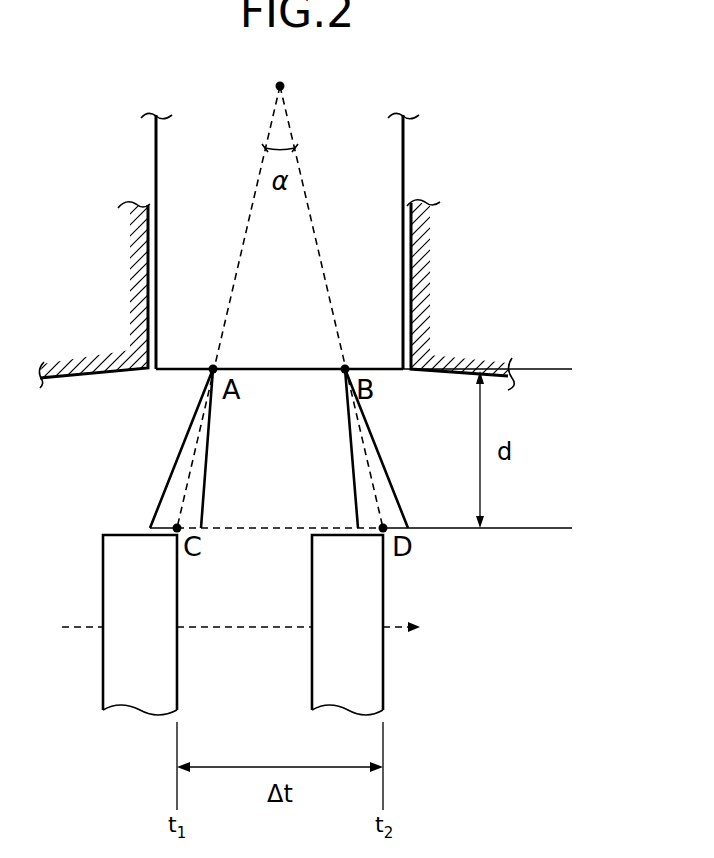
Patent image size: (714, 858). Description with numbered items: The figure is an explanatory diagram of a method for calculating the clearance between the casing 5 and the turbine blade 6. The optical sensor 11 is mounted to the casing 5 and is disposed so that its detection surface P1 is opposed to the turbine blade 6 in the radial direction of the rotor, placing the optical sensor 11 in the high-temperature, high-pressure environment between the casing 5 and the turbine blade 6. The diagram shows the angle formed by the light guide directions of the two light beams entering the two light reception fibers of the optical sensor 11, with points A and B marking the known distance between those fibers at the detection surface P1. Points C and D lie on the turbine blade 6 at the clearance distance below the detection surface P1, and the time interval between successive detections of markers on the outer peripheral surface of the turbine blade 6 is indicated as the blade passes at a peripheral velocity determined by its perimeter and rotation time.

The optical sensor 11 is at (403, 148).
The casing 5 is at (505, 385).
The turbine blade 6 is at (387, 578).
The detection surface P1 is at (177, 372).